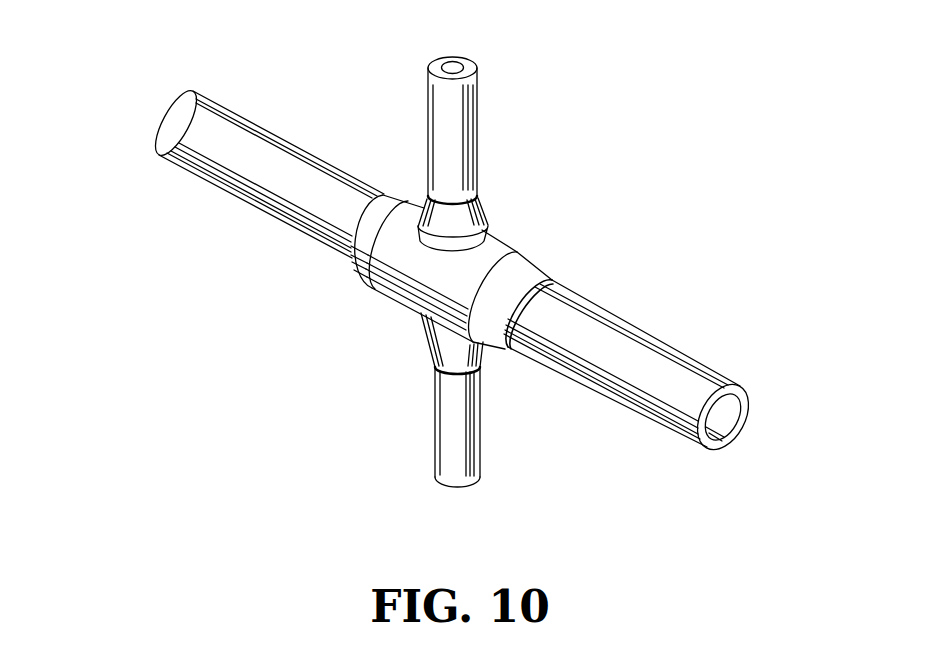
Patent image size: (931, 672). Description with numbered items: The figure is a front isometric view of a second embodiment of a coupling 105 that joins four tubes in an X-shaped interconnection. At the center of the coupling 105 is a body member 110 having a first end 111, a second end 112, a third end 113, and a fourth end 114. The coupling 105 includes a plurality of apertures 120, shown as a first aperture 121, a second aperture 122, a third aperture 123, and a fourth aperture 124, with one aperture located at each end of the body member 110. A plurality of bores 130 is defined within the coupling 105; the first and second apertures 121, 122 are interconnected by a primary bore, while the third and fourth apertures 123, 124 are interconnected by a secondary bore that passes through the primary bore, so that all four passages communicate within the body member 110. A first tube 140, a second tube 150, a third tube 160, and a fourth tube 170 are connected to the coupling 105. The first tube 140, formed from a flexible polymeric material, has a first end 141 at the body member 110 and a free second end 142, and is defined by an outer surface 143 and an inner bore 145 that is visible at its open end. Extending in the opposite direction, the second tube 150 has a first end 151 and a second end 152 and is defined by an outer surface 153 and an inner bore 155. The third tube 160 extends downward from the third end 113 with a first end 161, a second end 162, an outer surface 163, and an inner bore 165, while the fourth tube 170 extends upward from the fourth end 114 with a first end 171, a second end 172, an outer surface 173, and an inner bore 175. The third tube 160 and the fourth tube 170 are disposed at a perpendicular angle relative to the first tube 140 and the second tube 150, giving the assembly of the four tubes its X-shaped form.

The coupling 105 is at (326, 78).
The body member 110 is at (372, 285).
The first end 111 is at (388, 192).
The second end 112 is at (553, 281).
The third end 113 is at (433, 367).
The fourth end 114 is at (478, 187).
The plurality of apertures 120 is at (600, 190).
The first aperture 121 is at (385, 193).
The second aperture 122 is at (560, 284).
The third aperture 123 is at (430, 373).
The fourth aperture 124 is at (478, 188).
The plurality of bores 130 is at (365, 322).
The first tube 140 is at (227, 184).
The first end 141 is at (350, 262).
The second end 142 is at (174, 160).
The outer surface 143 is at (213, 97).
The inner bore 145 is at (168, 115).
The second tube 150 is at (655, 425).
The first end 151 is at (518, 352).
The second end 152 is at (703, 448).
The outer surface 153 is at (738, 383).
The inner bore 155 is at (727, 421).
The third tube 160 is at (433, 452).
The first end 161 is at (481, 370).
The second end 162 is at (481, 477).
The outer surface 163 is at (432, 477).
The inner bore 165 is at (453, 488).
The fourth tube 170 is at (478, 102).
The first end 171 is at (428, 167).
The second end 172 is at (477, 69).
The outer surface 173 is at (428, 70).
The inner bore 175 is at (455, 62).